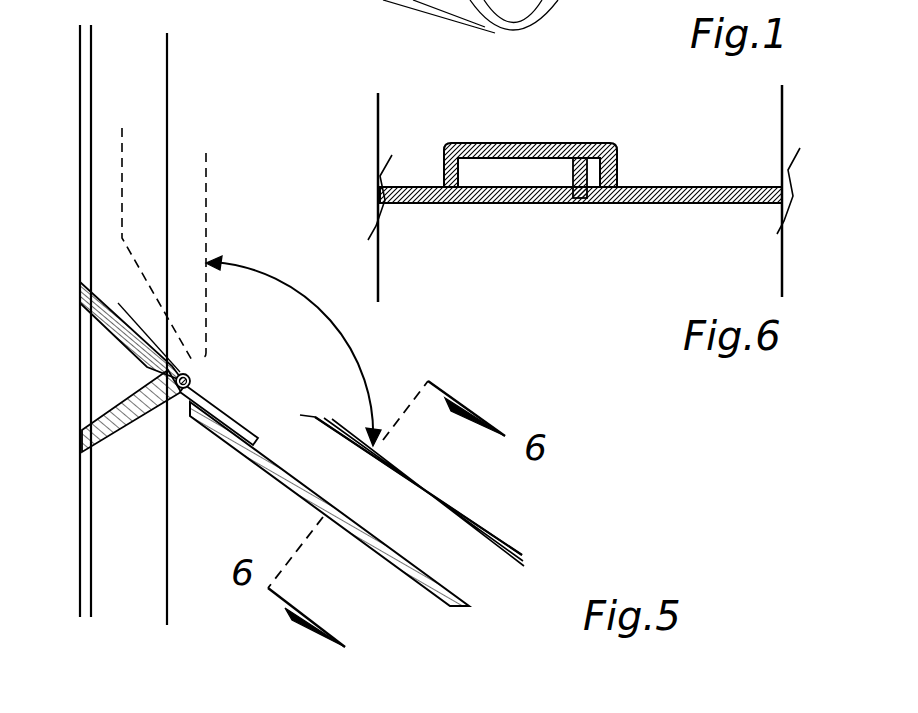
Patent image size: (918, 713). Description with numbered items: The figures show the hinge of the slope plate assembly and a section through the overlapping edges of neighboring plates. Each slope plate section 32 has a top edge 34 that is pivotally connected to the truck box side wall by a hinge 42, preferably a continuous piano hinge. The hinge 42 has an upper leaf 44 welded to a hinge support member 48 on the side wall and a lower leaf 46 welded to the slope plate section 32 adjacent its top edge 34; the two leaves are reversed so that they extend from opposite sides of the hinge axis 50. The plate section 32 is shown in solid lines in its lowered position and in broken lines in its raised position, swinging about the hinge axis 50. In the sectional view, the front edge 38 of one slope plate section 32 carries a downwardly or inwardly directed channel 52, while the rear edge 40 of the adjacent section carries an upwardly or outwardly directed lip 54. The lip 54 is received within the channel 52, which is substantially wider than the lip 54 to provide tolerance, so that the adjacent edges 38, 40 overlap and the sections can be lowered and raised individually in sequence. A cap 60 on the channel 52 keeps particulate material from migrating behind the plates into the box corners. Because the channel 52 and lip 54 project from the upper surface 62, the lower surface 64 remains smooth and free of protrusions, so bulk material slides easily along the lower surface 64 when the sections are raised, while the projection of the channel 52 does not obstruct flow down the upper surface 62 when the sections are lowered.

In FIG. 5, the slope plate section 32 is at (480, 517).
In FIG. 5, the top edge 34 is at (186, 406).
In FIG. 6, the front edge 38 is at (467, 204).
In FIG. 6, the rear edge 40 is at (574, 200).
In FIG. 5, the hinge 42 is at (167, 405).
In FIG. 5, the upper leaf 44 is at (167, 296).
In FIG. 5, the lower leaf 46 is at (238, 413).
In FIG. 5, the hinge support member 48 is at (141, 368).
In FIG. 5, the hinge axis 50 is at (192, 378).
In FIG. 6, the channel 52 is at (618, 162).
In FIG. 6, the lip 54 is at (573, 182).
In FIG. 6, the cap 60 is at (496, 180).
In FIG. 6, the upper surface 62 is at (419, 187).
In FIG. 5, the upper surface 62 is at (327, 492).
In FIG. 6, the lower surface 64 is at (397, 205).
In FIG. 5, the lower surface 64 is at (300, 492).